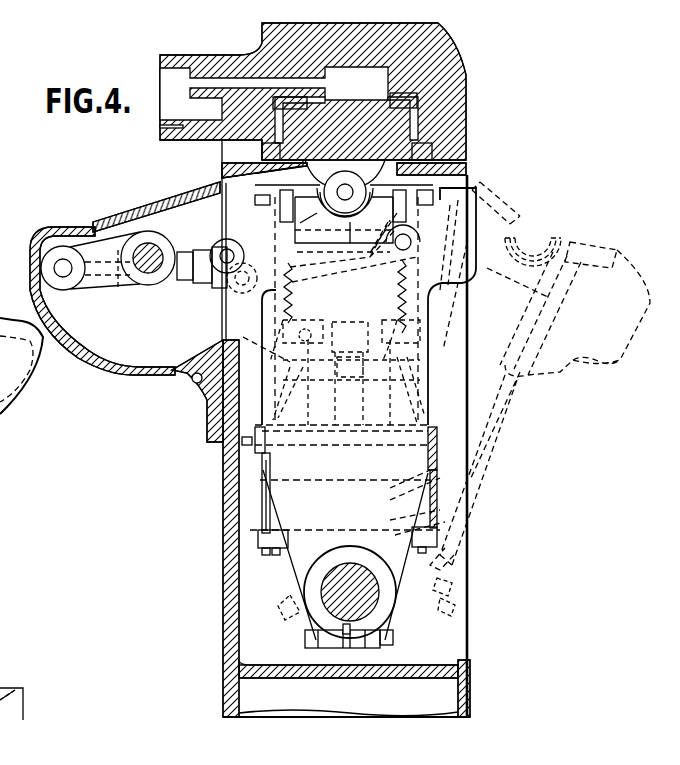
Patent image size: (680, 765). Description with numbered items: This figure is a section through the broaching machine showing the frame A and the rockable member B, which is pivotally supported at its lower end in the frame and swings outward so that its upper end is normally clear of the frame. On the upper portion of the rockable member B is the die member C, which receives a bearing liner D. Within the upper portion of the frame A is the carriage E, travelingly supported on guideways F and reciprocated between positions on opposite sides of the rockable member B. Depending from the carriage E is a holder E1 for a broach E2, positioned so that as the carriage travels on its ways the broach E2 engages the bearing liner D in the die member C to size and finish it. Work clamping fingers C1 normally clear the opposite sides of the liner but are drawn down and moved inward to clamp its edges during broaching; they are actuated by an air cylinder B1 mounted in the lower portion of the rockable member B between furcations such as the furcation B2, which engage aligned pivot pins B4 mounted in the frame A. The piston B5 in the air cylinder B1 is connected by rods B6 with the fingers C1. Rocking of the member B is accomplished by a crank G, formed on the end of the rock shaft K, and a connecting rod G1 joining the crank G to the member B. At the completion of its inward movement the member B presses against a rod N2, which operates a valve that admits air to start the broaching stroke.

The frame A is at (224, 570).
The rockable member B is at (428, 364).
The air cylinder B1 is at (393, 523).
The furcation B2 is at (393, 493).
The pivot pins B4 is at (382, 605).
The piston B5 is at (240, 488).
The rods B6 is at (261, 339).
The die member C is at (453, 410).
The work clamping fingers C1 is at (389, 200).
The bearing liner D is at (352, 252).
The carriage E is at (346, 108).
The holder E1 is at (345, 182).
The broach E2 is at (462, 118).
The guideways F is at (462, 72).
The crank G is at (105, 282).
The connecting rod G1 is at (130, 278).
The rock shaft K is at (148, 250).
The rod N2 is at (210, 426).